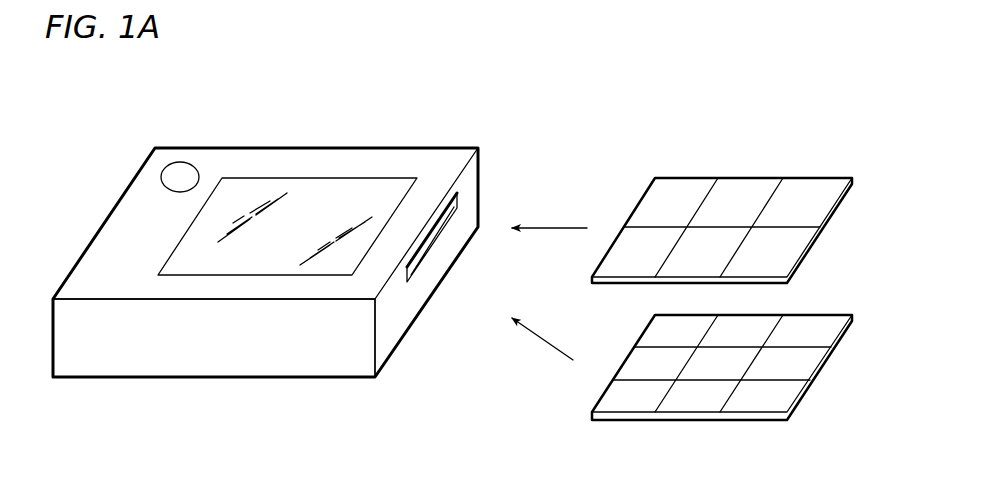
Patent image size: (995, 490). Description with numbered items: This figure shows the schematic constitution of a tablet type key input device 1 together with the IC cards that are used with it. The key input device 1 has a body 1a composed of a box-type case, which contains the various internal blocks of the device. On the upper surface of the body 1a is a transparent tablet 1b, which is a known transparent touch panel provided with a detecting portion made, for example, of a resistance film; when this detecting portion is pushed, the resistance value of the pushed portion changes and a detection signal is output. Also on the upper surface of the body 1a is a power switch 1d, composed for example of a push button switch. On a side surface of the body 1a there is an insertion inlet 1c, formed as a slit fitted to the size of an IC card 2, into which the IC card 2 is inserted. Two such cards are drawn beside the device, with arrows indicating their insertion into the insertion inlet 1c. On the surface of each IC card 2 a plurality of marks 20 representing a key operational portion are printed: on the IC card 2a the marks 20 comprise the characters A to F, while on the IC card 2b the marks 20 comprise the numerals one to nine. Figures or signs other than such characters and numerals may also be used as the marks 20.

The key input device 1 is at (257, 222).
The body 1a is at (76, 337).
The transparent tablet 1b is at (403, 178).
The insertion inlet 1c is at (430, 240).
The power switch 1d is at (178, 163).
The IC card 2 is at (731, 257).
The IC card 2a is at (795, 178).
The IC card 2b is at (797, 315).
The marks 20 is at (803, 238).